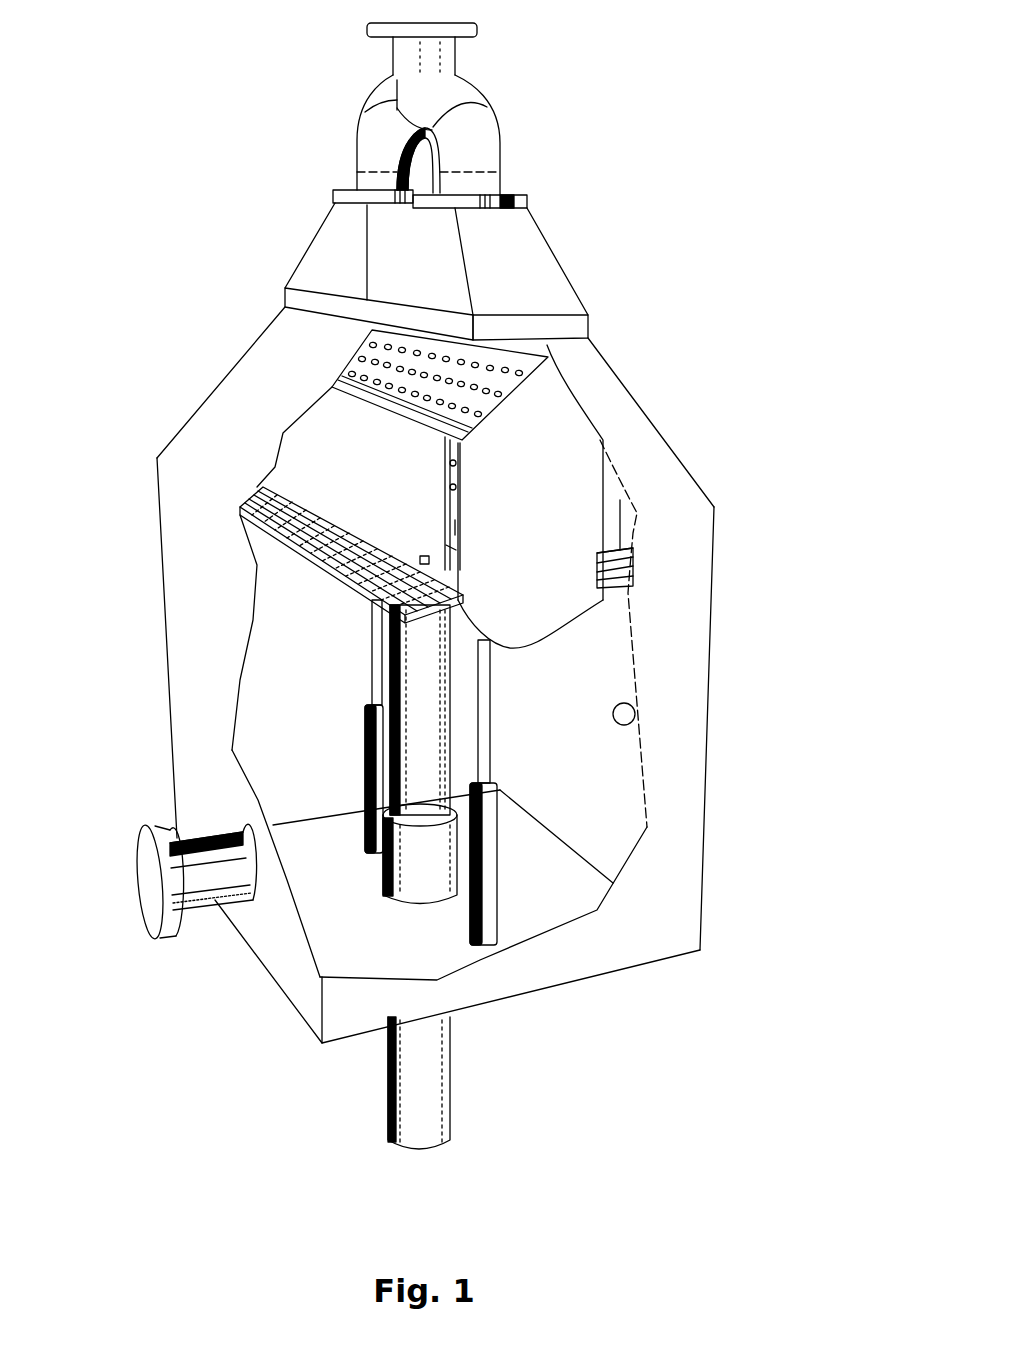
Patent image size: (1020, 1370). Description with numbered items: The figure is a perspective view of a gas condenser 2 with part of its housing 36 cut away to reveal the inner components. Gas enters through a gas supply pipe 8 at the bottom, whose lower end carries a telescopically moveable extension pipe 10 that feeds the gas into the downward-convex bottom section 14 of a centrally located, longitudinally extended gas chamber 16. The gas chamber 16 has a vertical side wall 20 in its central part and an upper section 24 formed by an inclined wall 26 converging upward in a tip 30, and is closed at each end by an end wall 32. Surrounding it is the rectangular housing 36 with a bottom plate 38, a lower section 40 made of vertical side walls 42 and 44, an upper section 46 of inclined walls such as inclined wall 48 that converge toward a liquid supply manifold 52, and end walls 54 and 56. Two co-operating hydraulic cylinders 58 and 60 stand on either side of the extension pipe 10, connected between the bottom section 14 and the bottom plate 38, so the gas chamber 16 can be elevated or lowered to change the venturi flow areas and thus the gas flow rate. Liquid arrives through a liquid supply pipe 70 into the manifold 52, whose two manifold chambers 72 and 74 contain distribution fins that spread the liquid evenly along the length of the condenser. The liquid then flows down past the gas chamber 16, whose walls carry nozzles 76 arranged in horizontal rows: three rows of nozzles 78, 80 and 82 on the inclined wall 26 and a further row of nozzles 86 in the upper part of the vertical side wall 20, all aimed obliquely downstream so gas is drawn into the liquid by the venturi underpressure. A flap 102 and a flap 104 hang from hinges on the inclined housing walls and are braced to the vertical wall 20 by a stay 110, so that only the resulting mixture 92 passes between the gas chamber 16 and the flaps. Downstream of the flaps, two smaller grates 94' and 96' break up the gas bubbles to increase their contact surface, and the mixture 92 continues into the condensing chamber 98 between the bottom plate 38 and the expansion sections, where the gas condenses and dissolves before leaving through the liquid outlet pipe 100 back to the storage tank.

The gas condenser 2 is at (698, 378).
The gas supply pipe 8 is at (427, 1055).
The extension pipe 10 is at (430, 705).
The bottom section 14 is at (493, 627).
The gas chamber 16 is at (532, 625).
The vertical side wall 20 is at (455, 527).
The upper section 24 is at (462, 465).
The inclined wall 26 is at (427, 430).
The tip 30 is at (500, 380).
The end wall 32 is at (565, 625).
The housing 36 is at (665, 490).
The bottom plate 38 is at (393, 948).
The lower section 40 is at (195, 700).
The vertical side wall 42 is at (185, 608).
The vertical side wall 44 is at (620, 780).
The upper section 46 is at (228, 400).
The inclined wall 48 is at (265, 352).
The liquid supply manifold 52 is at (538, 140).
The end wall 54 is at (635, 715).
The end wall 56 is at (287, 655).
The hydraulic cylinder 58 is at (500, 875).
The hydraulic cylinder 60 is at (365, 735).
The liquid supply pipe 70 is at (435, 57).
The manifold chamber 72 is at (518, 248).
The manifold chamber 74 is at (332, 237).
The nozzles 76 is at (372, 367).
The row of nozzles 78 is at (493, 405).
The row of nozzles 80 is at (478, 408).
The row of nozzles 82 is at (470, 425).
The row of nozzles 86 is at (465, 488).
The mixture 92 is at (358, 903).
The grate 94' is at (351, 555).
The grate 96' is at (704, 576).
The condensing chamber 98 is at (283, 765).
The liquid outlet pipe 100 is at (203, 883).
The flap 102 is at (452, 547).
The flap 104 is at (610, 565).
The stay 110 is at (425, 558).